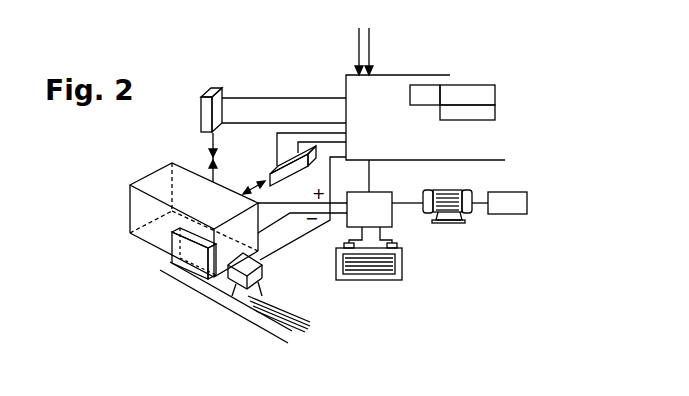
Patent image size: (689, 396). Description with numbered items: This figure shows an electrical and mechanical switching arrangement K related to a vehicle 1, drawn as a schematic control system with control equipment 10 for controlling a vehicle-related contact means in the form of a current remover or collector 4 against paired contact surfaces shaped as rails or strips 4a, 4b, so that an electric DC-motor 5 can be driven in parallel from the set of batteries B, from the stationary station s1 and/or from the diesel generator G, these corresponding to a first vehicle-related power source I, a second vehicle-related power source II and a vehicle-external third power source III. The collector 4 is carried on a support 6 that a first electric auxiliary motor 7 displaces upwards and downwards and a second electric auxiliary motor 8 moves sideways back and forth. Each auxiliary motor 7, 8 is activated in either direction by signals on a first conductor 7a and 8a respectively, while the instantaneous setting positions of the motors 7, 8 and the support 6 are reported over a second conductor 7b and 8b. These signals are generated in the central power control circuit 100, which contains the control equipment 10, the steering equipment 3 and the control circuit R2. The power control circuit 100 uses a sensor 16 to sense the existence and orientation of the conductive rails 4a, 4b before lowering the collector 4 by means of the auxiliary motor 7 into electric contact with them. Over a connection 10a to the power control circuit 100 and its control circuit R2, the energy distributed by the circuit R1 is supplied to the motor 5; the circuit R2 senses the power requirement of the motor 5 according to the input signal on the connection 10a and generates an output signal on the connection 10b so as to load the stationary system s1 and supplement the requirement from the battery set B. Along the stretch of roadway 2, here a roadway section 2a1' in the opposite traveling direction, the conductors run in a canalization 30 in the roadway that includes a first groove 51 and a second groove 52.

The vehicle 1 is at (253, 108).
The stretch of a roadway 2 is at (206, 308).
The steering equipment 3 is at (432, 98).
The current remover or collector 4 is at (170, 262).
The electrical conductive first rail 4a is at (220, 300).
The electrical conductive second rail 4b is at (304, 323).
The DC-motor 5 is at (445, 190).
The support 6 is at (187, 195).
The first electric auxiliary motor 7 is at (201, 107).
The first conductor 7a is at (293, 122).
The second conductor 7b is at (325, 98).
The second electric auxiliary motor 8 is at (270, 174).
The first conductor 8a is at (277, 147).
The second conductor 8b is at (334, 142).
The control equipment 10 is at (488, 113).
The connection 10a is at (362, 37).
The connection 10b is at (370, 183).
The sensor 16 is at (263, 266).
The canalization 30 is at (250, 315).
The first roadway section related groove 51 is at (283, 334).
The second roadway section related groove 52 is at (279, 314).
The power control circuit 100 is at (448, 98).
The roadway section 2a1' is at (338, 341).
The set of batteries B is at (393, 262).
The diesel generator G is at (357, 42).
The first vehicle related power source I is at (370, 38).
The second vehicle related power source II is at (365, 300).
The third power source III is at (167, 300).
The switching arrangement K is at (193, 212).
The energy distributing circuit R1 is at (400, 228).
The control circuit R2 is at (478, 84).
The stationary station s1 is at (270, 300).